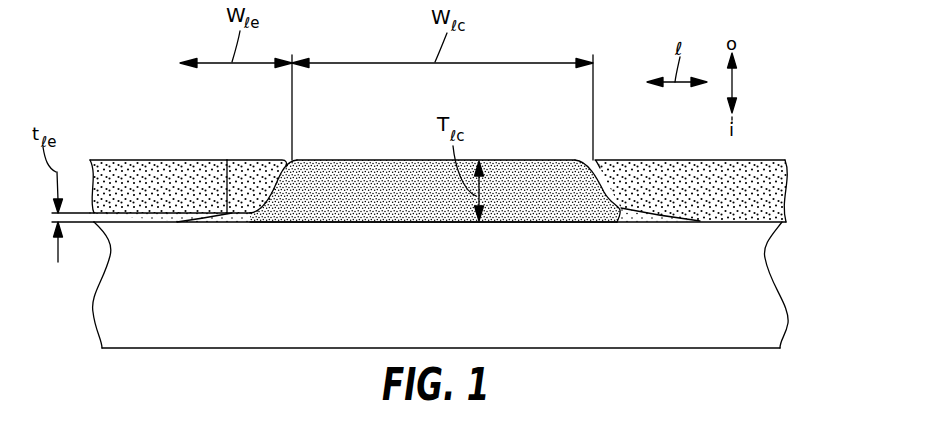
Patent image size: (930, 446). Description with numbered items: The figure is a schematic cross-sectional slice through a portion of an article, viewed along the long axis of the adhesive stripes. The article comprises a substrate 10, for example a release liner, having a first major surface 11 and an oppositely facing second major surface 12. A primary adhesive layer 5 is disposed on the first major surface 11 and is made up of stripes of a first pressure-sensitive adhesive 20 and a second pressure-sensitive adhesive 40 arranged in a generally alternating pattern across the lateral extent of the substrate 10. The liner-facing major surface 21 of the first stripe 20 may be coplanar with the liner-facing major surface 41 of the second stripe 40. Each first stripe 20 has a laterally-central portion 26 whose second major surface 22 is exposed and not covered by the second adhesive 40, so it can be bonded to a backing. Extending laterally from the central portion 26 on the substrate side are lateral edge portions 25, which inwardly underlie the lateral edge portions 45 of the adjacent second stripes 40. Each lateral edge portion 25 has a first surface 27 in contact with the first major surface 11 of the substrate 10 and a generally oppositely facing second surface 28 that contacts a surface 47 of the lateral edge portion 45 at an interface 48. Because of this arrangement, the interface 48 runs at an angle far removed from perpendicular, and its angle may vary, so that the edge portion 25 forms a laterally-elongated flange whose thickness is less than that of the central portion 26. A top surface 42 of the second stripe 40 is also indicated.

The primary adhesive layer 5 is at (800, 182).
The substrate 10 is at (463, 309).
The first major surface 11 is at (349, 222).
The second major surface 12 is at (270, 348).
The first pressure-sensitive adhesive stripe 20 is at (515, 162).
The liner-facing major surface of first adhesive stripe 21 is at (545, 222).
The second major surface of laterally-central portion 22 is at (565, 162).
The lateral edge portion of first adhesive stripe 25 is at (220, 221).
The laterally-central portion 26 is at (435, 192).
The first surface of lateral edge portion 27 is at (193, 223).
The second surface of lateral edge portion 28 is at (226, 160).
The second pressure-sensitive adhesive stripe 40 is at (188, 192).
The liner-facing major surface of second adhesive stripe 41 is at (122, 225).
The top surface of edge layer 42 is at (112, 160).
The lateral edge portion of second adhesive stripe 45 is at (259, 163).
The surface of lateral edge portion of second adhesive stripe 47 is at (248, 223).
The interface 48 is at (283, 222).